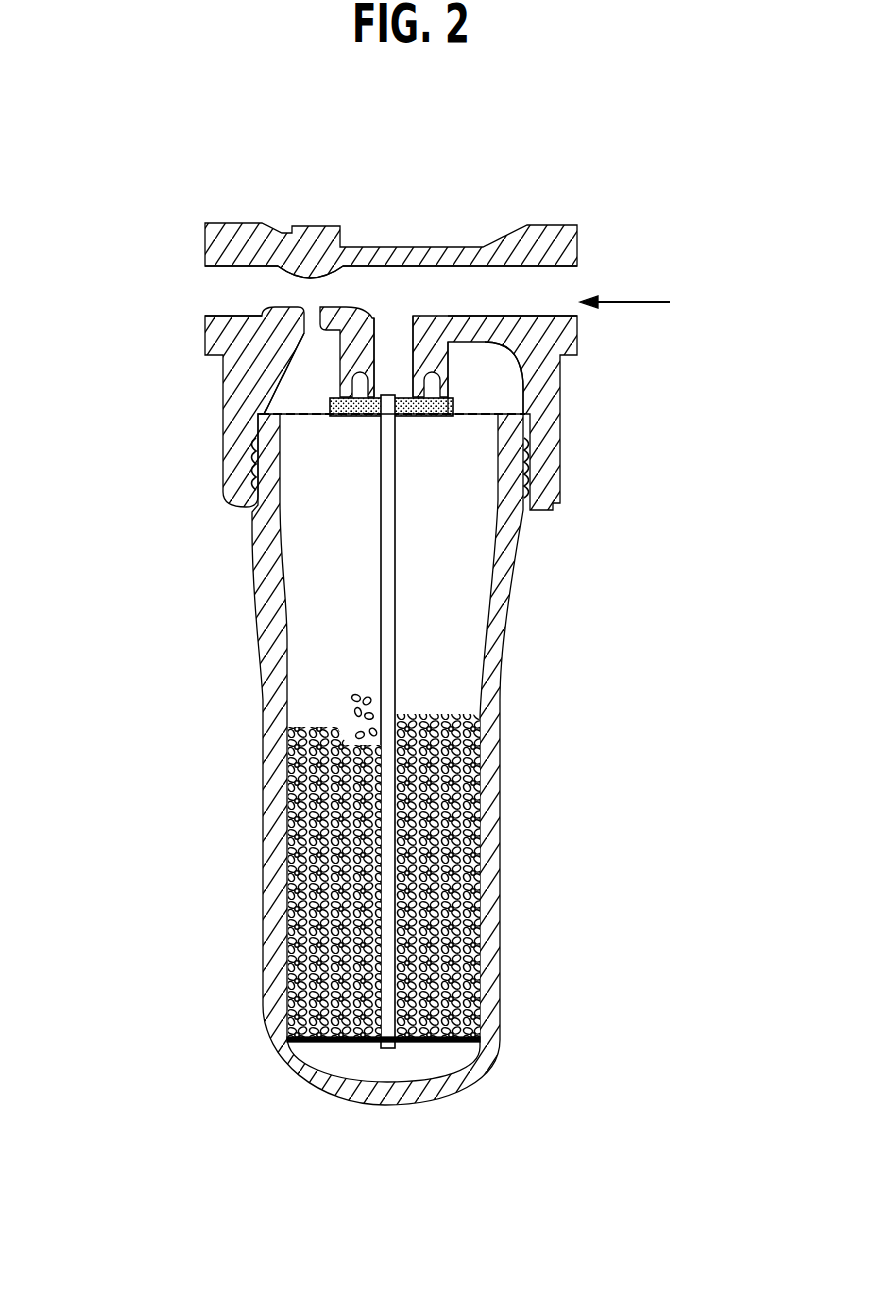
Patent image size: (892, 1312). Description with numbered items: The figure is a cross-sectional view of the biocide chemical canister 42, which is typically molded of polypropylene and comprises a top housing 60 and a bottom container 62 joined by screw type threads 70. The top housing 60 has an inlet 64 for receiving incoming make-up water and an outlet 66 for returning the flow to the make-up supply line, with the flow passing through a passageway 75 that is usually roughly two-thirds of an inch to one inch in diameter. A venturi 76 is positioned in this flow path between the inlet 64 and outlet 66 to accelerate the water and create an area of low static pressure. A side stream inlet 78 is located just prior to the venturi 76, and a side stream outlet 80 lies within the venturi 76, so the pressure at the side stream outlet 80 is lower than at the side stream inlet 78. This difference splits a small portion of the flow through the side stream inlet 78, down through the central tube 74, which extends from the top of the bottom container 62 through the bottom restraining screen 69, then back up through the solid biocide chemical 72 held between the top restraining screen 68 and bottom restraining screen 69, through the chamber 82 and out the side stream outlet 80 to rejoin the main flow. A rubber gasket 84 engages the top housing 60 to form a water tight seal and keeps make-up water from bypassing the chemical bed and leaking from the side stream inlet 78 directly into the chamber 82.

The canister 42 is at (166, 243).
The top housing 60 is at (578, 225).
The bottom container 62 is at (502, 807).
The inlet 64 is at (580, 275).
The outlet 66 is at (205, 290).
The top restraining screen 68 is at (300, 417).
The bottom restraining screen 69 is at (317, 1043).
The screw type threads 70 is at (537, 513).
The biocide chemical 72 is at (310, 725).
The tube 74 is at (396, 578).
The passageway 75 is at (468, 283).
The venturi 76 is at (353, 260).
The side stream inlet 78 is at (395, 337).
The side stream outlet 80 is at (315, 307).
The chamber 82 is at (317, 395).
The gasket 84 is at (420, 417).